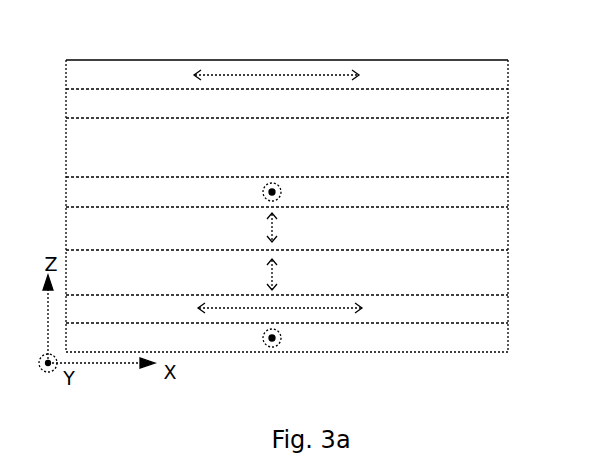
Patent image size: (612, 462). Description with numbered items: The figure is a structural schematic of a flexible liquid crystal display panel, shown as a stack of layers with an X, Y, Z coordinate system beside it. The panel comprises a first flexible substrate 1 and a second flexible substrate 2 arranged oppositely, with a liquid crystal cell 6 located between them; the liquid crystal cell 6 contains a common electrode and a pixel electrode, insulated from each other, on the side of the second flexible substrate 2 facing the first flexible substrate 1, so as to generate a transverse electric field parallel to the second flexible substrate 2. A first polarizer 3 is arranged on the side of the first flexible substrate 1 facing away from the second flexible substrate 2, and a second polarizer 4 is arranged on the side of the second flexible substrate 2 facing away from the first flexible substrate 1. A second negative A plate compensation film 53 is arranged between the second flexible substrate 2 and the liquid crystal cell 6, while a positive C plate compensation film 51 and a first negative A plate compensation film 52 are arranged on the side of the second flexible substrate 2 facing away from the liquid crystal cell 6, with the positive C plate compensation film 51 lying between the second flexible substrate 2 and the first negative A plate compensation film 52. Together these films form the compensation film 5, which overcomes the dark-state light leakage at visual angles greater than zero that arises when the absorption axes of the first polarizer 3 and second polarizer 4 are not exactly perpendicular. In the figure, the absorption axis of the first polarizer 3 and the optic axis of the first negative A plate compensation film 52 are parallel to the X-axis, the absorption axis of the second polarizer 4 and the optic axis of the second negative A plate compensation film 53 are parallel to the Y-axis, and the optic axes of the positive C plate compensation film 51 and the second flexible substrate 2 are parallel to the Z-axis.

The first flexible substrate 1 is at (95, 103).
The second flexible substrate 2 is at (95, 227).
The first polarizer 3 is at (287, 58).
The second polarizer 4 is at (287, 356).
The compensation film 5 is at (567, 185).
The liquid crystal cell 6 is at (473, 147).
The positive C plate compensation film 51 is at (478, 275).
The first negative A plate compensation film 52 is at (478, 309).
The second negative A plate compensation film 53 is at (473, 192).